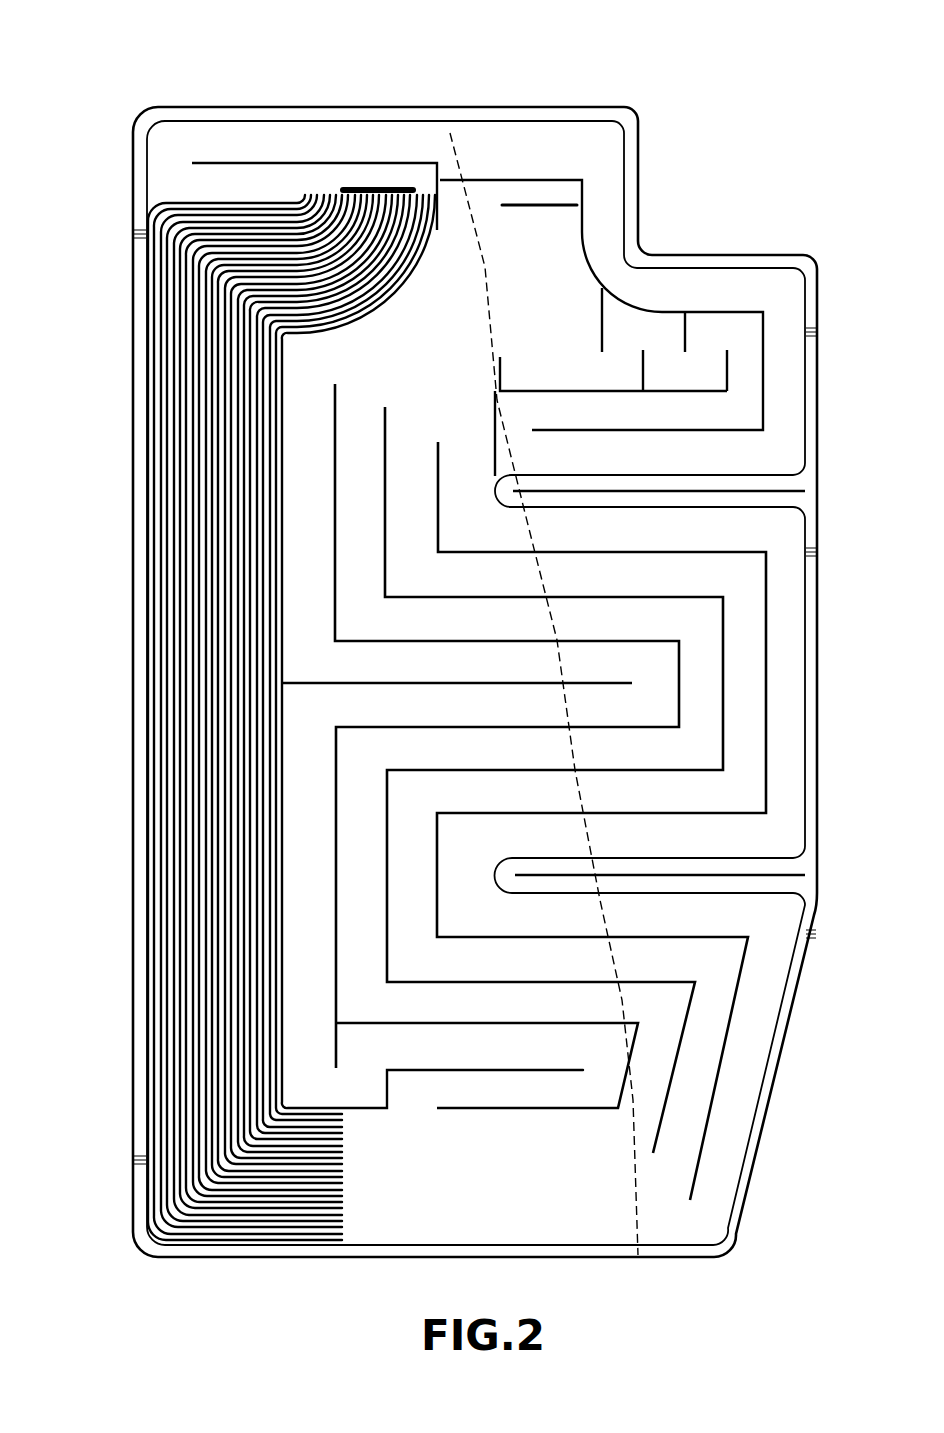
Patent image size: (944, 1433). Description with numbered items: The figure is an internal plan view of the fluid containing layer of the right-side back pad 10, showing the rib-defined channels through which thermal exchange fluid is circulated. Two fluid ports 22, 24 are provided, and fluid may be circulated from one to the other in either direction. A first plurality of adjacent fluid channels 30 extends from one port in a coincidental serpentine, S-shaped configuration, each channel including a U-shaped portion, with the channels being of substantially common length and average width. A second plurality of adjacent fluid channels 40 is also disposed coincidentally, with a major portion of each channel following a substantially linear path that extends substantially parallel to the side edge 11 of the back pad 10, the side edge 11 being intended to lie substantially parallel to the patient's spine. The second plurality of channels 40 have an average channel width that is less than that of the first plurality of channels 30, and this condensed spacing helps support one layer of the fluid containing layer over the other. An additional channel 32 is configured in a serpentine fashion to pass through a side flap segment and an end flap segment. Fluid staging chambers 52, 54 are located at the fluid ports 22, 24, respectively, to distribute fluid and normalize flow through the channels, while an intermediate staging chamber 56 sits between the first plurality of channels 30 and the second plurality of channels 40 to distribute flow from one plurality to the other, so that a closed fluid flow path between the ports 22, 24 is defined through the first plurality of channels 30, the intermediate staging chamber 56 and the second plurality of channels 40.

The back pad 10 is at (130, 96).
The side edge 11 is at (131, 945).
The fluid port 22 is at (566, 200).
The fluid port 24 is at (401, 178).
The first plurality of adjacent fluid channels 30 is at (746, 692).
The additional channel 32 is at (748, 388).
The second plurality of adjacent fluid channels 40 is at (182, 664).
The fluid staging chamber 52 is at (503, 322).
The fluid staging chamber 54 is at (316, 180).
The intermediate staging chamber 56 is at (557, 1211).